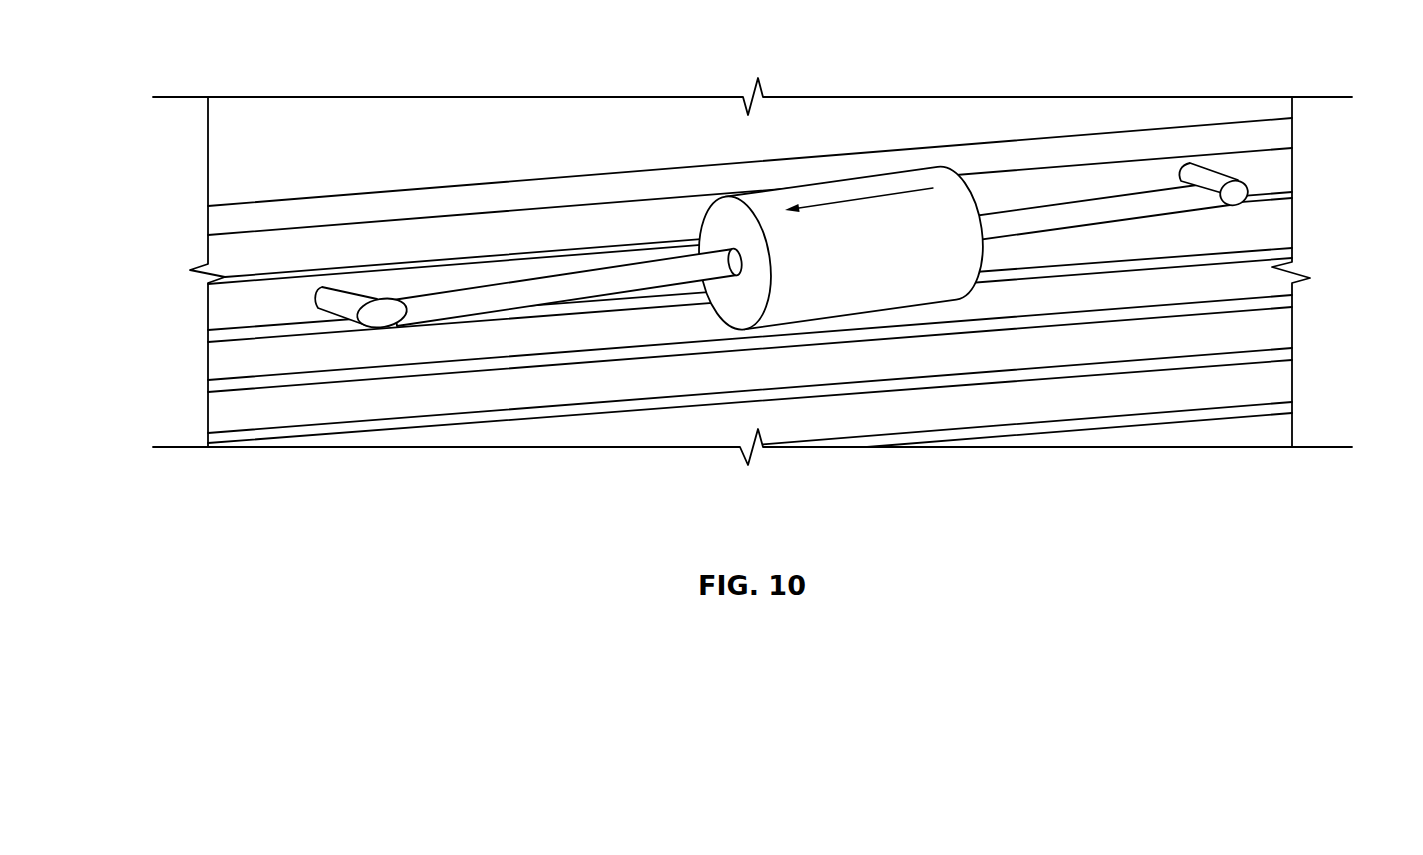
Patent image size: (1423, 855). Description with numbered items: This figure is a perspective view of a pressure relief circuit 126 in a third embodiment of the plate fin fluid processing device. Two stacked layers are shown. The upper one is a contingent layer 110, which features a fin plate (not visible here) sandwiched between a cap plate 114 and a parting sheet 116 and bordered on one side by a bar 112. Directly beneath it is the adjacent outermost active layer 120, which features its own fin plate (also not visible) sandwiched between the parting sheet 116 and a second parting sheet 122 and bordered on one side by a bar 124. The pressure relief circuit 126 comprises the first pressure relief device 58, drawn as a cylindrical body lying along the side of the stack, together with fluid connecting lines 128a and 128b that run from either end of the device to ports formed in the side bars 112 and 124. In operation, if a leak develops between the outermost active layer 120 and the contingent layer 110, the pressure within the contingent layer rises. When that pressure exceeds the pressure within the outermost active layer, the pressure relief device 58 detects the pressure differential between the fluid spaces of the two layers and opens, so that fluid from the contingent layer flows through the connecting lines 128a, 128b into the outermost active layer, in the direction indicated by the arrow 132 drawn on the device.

The first pressure relief device 58 is at (847, 272).
The contingent layer 110 is at (1312, 177).
The bar 112 is at (390, 235).
The cap plate 114 is at (558, 125).
The parting sheet 116 is at (247, 280).
The outermost active layer 120 is at (1312, 231).
The parting sheet 122 is at (263, 330).
The bar 124 is at (223, 321).
The pressure relief circuit 126 is at (830, 112).
The fluid connecting line 128a is at (1040, 215).
The fluid connecting line 128b is at (492, 293).
The arrow 132 is at (907, 193).